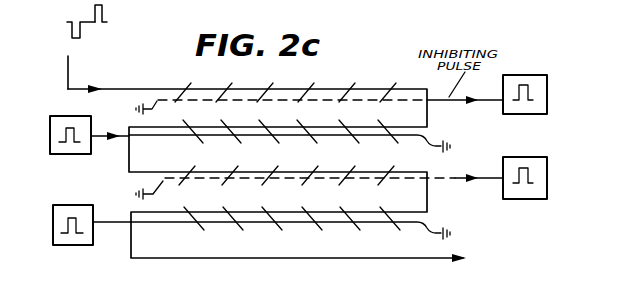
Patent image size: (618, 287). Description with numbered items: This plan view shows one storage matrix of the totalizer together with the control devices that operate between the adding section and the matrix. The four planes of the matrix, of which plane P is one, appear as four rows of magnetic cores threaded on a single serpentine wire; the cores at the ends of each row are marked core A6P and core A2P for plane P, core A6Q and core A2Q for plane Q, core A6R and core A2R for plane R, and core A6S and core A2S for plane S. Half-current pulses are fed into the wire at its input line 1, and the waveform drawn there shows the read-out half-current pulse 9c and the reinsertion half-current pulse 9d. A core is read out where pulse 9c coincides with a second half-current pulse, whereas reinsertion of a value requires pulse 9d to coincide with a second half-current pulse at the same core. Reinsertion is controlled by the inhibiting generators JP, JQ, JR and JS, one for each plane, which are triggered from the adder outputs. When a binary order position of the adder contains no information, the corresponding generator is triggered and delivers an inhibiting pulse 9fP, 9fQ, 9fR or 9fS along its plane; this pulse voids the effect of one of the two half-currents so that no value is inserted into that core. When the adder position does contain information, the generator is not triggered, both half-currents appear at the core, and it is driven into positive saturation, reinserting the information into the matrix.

The delay line input 1 is at (267, 165).
The half-current pulse 9c is at (70, 33).
The half-current pulse 9d is at (106, 15).
The matrix plane P is at (611, 284).
The magnet core of plane P A6P is at (186, 89).
The magnet core of plane P A2P is at (346, 88).
The magnet core of plane Q A6Q is at (184, 124).
The magnet core of plane Q A2Q is at (340, 126).
The magnet core of plane R A6R is at (185, 170).
The magnet core of plane R A2R is at (340, 169).
The magnet core of plane S A6S is at (183, 210).
The magnet core of plane S A2S is at (346, 190).
The inhibiting generator JP is at (547, 103).
The inhibiting generator JQ is at (80, 154).
The inhibiting generator JR is at (547, 184).
The inhibiting generator JS is at (72, 245).
The inhibiting pulse 9fP is at (529, 87).
The inhibiting pulse 9fQ is at (75, 132).
The inhibiting pulse 9fR is at (529, 170).
The inhibiting pulse 9fS is at (78, 227).